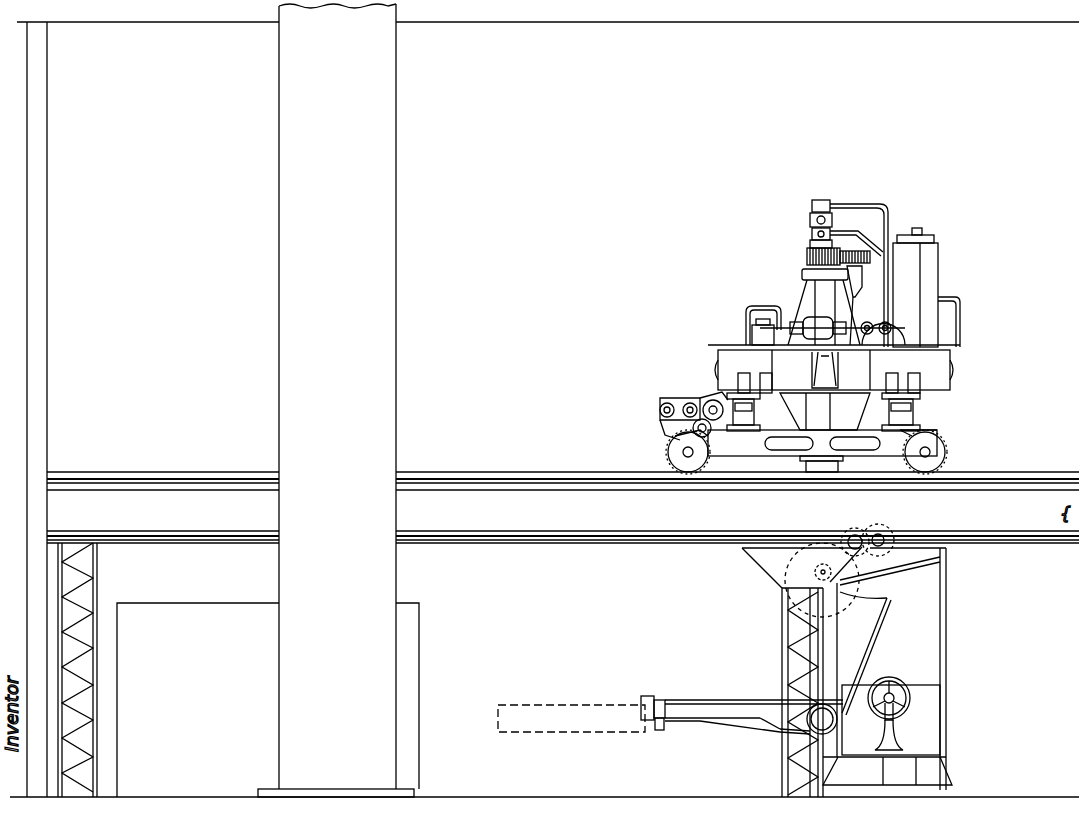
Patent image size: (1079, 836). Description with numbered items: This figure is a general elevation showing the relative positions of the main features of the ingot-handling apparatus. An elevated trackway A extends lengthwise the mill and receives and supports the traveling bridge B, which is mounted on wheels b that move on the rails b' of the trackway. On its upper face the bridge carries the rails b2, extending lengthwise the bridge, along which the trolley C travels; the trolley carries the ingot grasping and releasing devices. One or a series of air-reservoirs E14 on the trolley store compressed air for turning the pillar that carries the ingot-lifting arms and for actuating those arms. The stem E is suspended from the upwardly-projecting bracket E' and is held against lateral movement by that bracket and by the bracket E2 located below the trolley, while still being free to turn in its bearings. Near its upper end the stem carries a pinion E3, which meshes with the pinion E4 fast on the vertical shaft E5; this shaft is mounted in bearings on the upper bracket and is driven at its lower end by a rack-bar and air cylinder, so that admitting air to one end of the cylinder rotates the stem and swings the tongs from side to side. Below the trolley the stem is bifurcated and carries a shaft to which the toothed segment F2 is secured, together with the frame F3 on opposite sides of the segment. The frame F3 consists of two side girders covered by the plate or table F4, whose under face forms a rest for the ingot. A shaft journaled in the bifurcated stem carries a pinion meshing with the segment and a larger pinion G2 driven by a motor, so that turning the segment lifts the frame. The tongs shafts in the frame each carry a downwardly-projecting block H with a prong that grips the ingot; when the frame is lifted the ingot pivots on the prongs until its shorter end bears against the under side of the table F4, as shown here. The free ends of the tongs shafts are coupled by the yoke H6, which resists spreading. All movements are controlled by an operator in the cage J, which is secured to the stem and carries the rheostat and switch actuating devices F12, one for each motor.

The elevated trackway A is at (563, 507).
The traveling bridge B is at (822, 443).
The wheels b is at (675, 452).
The rails b' is at (563, 462).
The rails b2 is at (735, 392).
The trolley C is at (834, 369).
The stem E is at (842, 484).
The upwardly-projecting bracket E' is at (861, 314).
The bracket E2 is at (825, 411).
The pinion E3 is at (808, 257).
The pinion E4 is at (870, 256).
The vertical shaft E5 is at (885, 268).
The air-reservoir E14 is at (912, 282).
The larger pinion G2 is at (865, 584).
The segment F2 is at (872, 638).
The rheostat and switch actuating devices F12 is at (897, 680).
The frame F3 is at (740, 714).
The plate or table F4 is at (696, 700).
The block H is at (659, 730).
The yoke H6 is at (656, 697).
The cage J is at (920, 760).